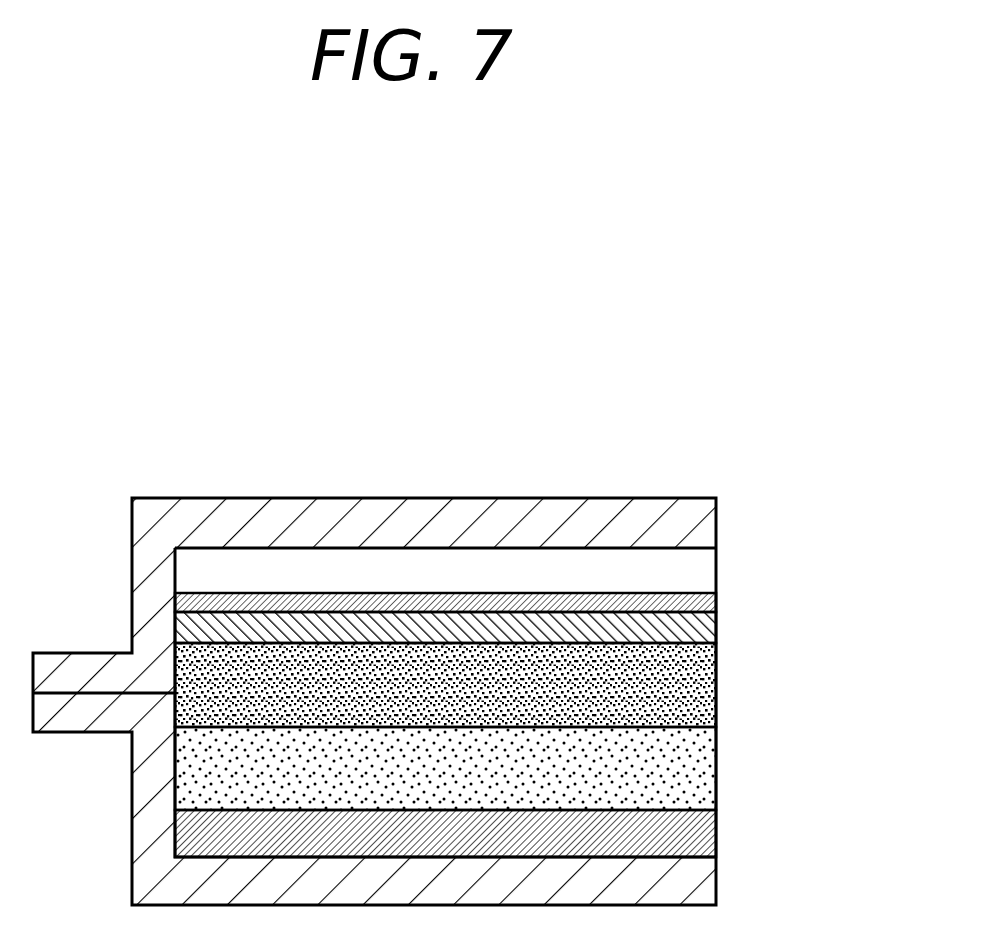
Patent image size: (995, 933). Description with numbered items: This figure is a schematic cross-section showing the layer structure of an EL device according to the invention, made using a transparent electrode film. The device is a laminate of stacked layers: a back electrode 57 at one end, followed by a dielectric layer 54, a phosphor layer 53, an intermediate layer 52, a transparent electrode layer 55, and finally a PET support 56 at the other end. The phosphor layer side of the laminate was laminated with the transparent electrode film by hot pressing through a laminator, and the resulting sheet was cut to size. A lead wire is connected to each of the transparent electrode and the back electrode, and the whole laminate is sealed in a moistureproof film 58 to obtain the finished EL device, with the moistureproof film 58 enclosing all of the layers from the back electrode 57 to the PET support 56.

The moistureproof film 58 is at (697, 522).
The PET support 56 is at (695, 570).
The transparent electrode layer 55 is at (717, 597).
The intermediate layer 52 is at (717, 622).
The phosphor layer 53 is at (717, 680).
The dielectric layer 54 is at (697, 770).
The back electrode 57 is at (705, 837).